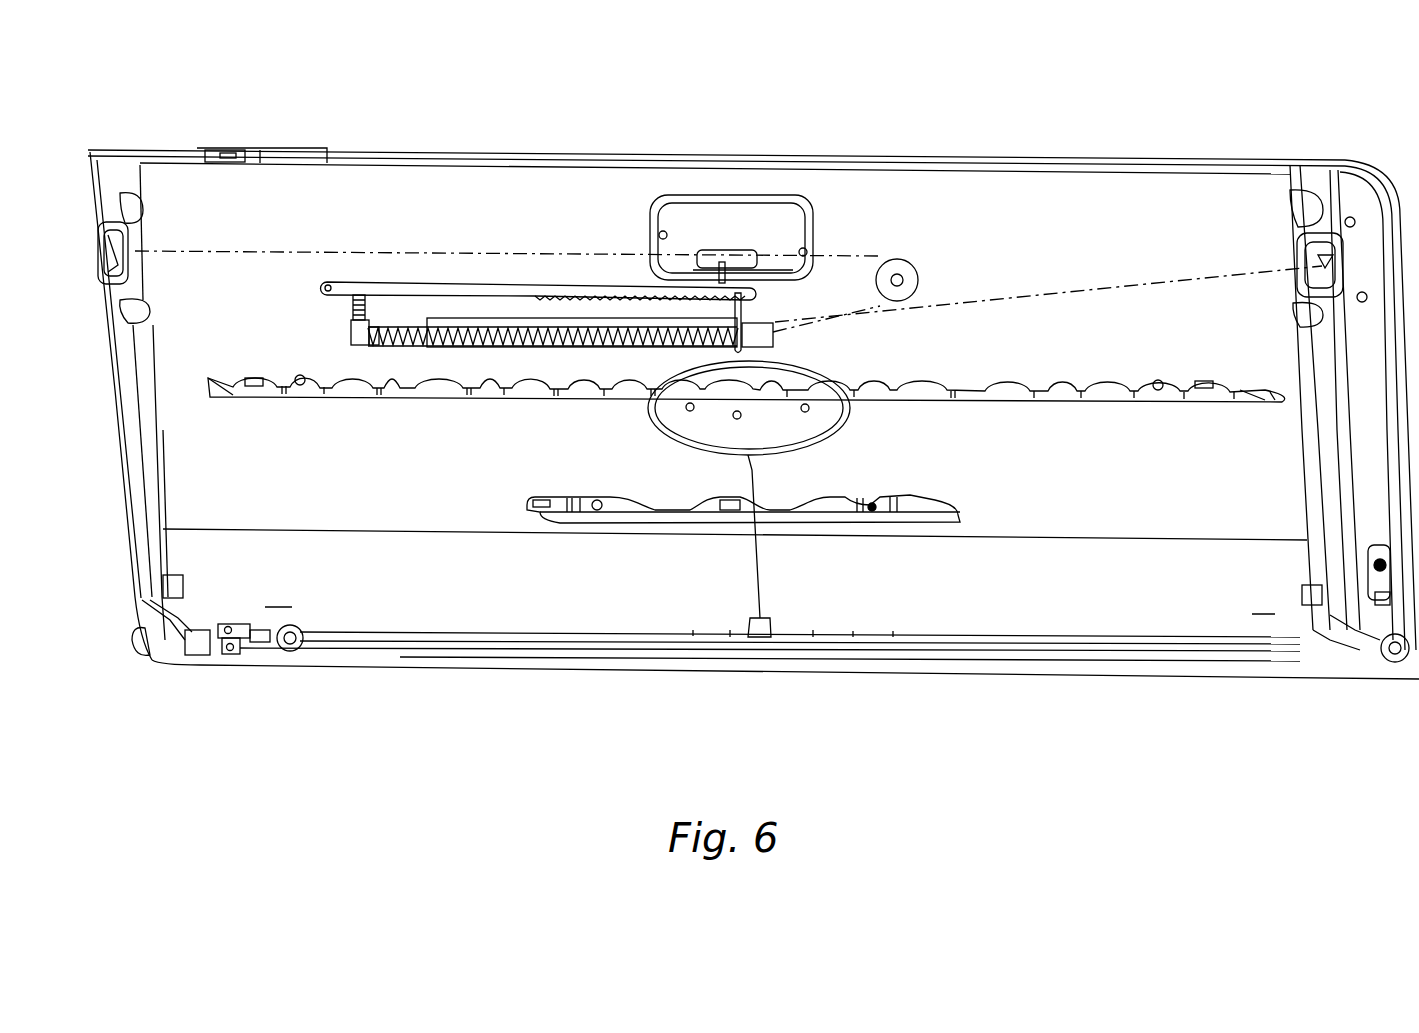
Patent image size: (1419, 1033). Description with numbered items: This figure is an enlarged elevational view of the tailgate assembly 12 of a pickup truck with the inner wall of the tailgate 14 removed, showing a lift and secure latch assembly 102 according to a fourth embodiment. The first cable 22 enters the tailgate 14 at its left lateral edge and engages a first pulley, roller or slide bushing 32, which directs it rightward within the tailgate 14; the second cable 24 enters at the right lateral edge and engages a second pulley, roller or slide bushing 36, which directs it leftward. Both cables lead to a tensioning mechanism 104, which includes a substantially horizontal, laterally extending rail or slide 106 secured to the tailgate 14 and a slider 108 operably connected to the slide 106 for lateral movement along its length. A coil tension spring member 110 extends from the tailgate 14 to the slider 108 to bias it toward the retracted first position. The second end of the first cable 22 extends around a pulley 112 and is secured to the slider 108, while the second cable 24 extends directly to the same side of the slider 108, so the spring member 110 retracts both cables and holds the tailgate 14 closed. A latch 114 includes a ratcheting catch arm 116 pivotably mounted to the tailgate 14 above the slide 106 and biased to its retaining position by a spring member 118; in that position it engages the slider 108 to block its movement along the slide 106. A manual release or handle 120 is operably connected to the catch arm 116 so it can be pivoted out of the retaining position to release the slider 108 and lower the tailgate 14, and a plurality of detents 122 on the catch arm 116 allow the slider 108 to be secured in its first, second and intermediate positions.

The tailgate assembly 12 is at (1024, 150).
The tailgate 14 is at (955, 153).
The first support member or cable 22 is at (405, 284).
The second support member or cable 24 is at (1138, 290).
The first pulley, roller or slide bushing 32 is at (134, 260).
The second pulley, roller or slide bushing 36 is at (1325, 266).
The lift and secure latch assembly 102 is at (602, 191).
The tensioning mechanism 104 is at (527, 348).
The rail or slide 106 is at (777, 345).
The slider 108 is at (747, 311).
The spring member 110 is at (407, 345).
The pulley 112 is at (922, 282).
The latch 114 is at (454, 275).
The ratcheting catch arm 116 is at (546, 292).
The spring member 118 is at (352, 305).
The manual release or handle 120 is at (770, 212).
The detents 122 is at (537, 300).